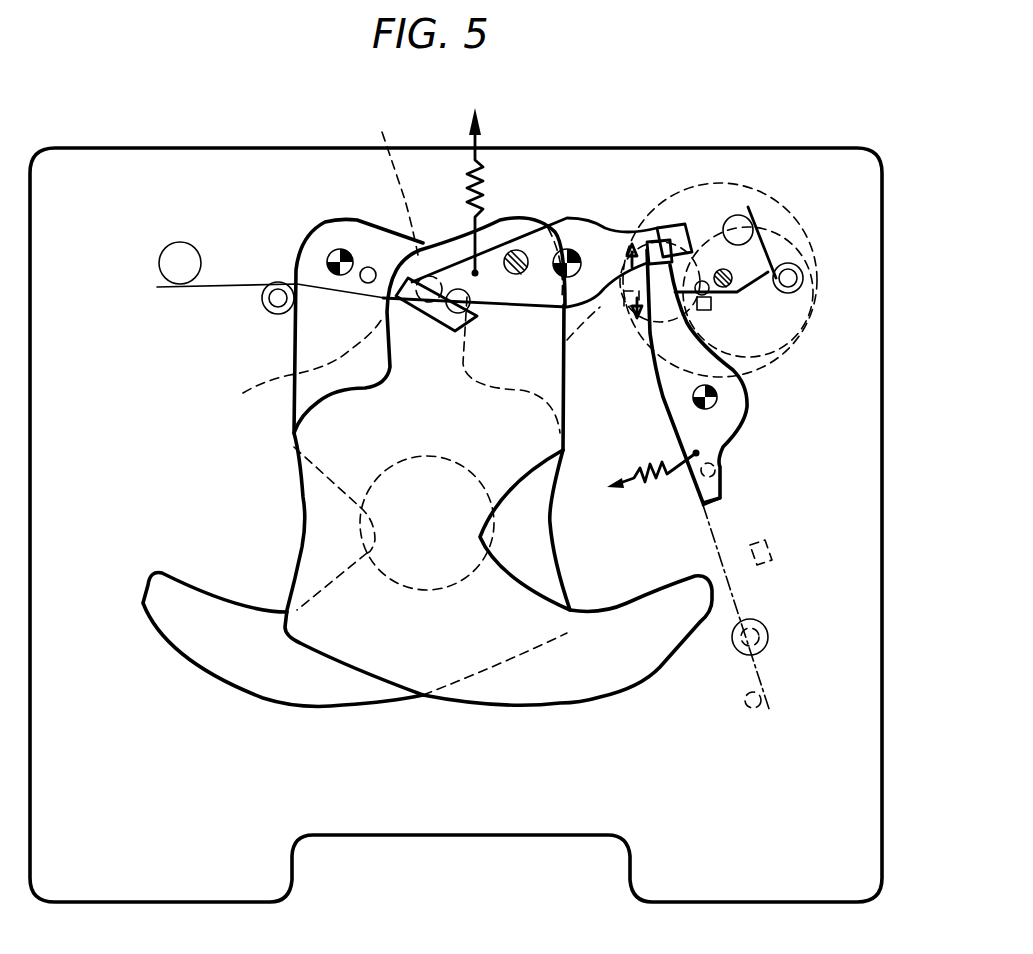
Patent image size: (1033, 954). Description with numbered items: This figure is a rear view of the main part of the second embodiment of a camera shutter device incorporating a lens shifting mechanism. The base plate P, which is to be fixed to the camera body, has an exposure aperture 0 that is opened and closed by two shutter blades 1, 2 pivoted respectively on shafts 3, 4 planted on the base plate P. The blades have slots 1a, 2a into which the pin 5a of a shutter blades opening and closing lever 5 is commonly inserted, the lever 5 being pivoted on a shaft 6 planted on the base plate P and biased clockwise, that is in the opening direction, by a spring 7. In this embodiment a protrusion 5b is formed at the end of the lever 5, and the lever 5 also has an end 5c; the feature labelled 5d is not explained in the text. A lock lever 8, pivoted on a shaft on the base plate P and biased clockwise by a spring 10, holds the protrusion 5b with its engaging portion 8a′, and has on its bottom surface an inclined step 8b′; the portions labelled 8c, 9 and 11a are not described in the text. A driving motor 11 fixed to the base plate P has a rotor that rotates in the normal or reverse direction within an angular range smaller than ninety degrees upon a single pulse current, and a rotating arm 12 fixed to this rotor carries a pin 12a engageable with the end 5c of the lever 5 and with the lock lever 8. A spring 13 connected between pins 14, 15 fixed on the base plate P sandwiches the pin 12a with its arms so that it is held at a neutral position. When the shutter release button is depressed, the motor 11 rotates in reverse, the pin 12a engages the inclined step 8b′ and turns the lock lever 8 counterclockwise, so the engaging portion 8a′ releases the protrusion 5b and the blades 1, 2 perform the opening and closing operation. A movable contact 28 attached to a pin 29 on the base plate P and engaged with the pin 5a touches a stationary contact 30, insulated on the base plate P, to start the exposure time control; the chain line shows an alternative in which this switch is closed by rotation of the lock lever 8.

The base plate P is at (97, 175).
The shutter blade 1 is at (565, 665).
The slot 1a is at (298, 367).
The shutter blade 2 is at (323, 678).
The slot 2a is at (391, 180).
The shaft 3 is at (516, 280).
The shaft 4 is at (328, 250).
The shutter blades opening and closing lever 5 is at (605, 226).
The pin 5a is at (418, 303).
The protrusion 5b is at (680, 224).
The end 5c is at (695, 265).
The pin 5d is at (468, 315).
The shaft 6 is at (568, 248).
The spring 7 is at (470, 183).
The lock lever 8 is at (720, 413).
The engaging portion 8a′ is at (663, 240).
The inclined step 8b′ is at (632, 345).
The pawl lever end 8c is at (732, 487).
The pivot pin 9 is at (693, 398).
The spring 10 is at (655, 485).
The driving motor 11 is at (790, 352).
The arm 11a is at (795, 240).
The rotating arm 12 is at (805, 316).
The pin 12a is at (572, 330).
The spring 13 is at (743, 300).
The pin 14 is at (803, 278).
The pin 15 is at (710, 310).
The movable contact 28 is at (325, 290).
The pin 29 is at (267, 307).
The stationary contact 30 is at (365, 266).
The exposure aperture 0 is at (425, 595).